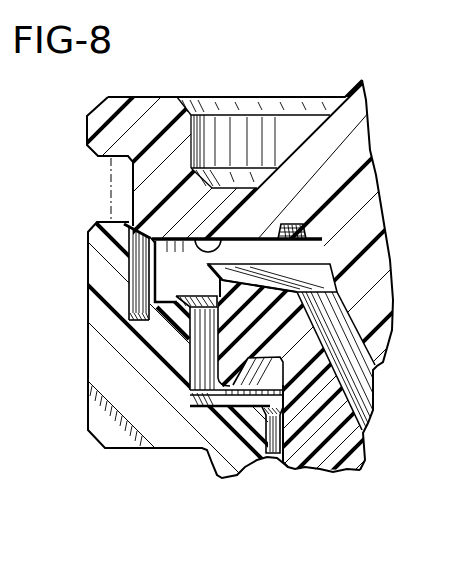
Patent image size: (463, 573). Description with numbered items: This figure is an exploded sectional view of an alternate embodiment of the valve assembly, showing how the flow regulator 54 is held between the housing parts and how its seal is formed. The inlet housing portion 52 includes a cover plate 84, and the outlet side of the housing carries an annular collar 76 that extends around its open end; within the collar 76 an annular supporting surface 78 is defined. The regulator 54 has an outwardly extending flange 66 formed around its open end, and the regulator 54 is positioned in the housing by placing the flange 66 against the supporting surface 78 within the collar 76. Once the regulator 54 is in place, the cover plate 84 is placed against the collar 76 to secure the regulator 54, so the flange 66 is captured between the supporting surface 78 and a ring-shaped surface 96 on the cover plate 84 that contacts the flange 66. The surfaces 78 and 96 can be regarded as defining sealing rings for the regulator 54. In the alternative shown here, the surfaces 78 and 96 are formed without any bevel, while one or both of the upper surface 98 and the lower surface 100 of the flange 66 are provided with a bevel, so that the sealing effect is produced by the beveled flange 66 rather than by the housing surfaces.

The inlet housing portion 52 is at (382, 163).
The flow regulator 54 is at (319, 476).
The flange 66 is at (243, 301).
The annular collar 76 is at (93, 309).
The supporting surface 78 is at (196, 403).
The cover plate 84 is at (160, 189).
The beveled surface 96 is at (194, 239).
The upper surface of flange 98 is at (268, 246).
The lower surface of flange 100 is at (247, 375).